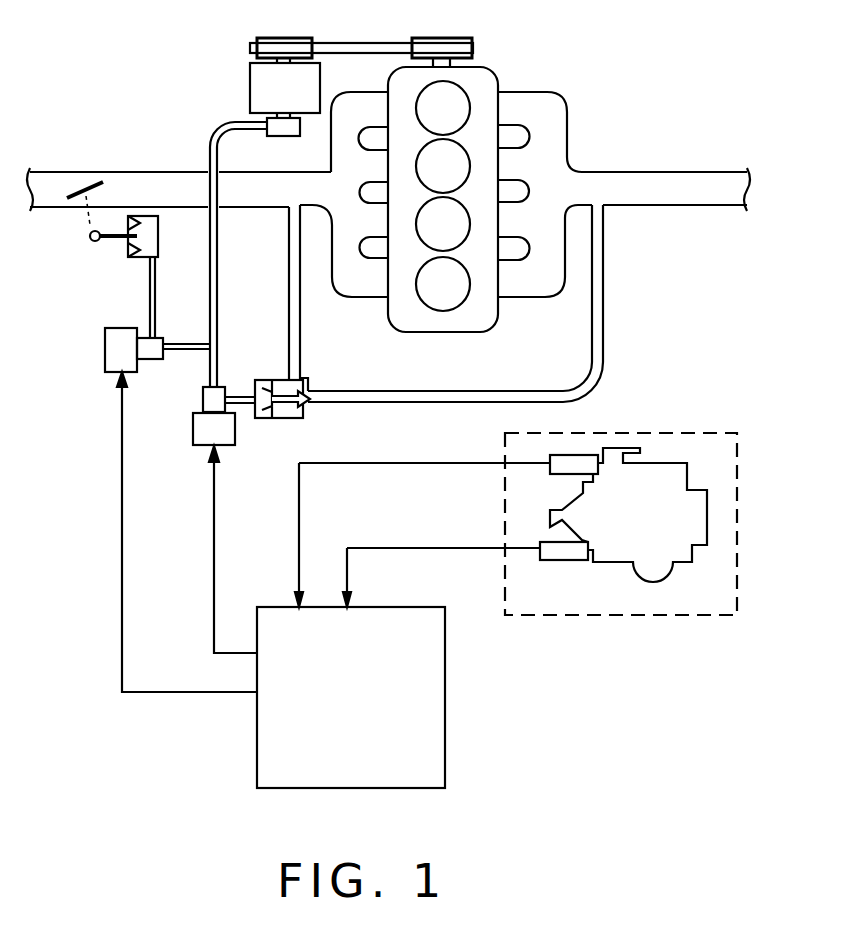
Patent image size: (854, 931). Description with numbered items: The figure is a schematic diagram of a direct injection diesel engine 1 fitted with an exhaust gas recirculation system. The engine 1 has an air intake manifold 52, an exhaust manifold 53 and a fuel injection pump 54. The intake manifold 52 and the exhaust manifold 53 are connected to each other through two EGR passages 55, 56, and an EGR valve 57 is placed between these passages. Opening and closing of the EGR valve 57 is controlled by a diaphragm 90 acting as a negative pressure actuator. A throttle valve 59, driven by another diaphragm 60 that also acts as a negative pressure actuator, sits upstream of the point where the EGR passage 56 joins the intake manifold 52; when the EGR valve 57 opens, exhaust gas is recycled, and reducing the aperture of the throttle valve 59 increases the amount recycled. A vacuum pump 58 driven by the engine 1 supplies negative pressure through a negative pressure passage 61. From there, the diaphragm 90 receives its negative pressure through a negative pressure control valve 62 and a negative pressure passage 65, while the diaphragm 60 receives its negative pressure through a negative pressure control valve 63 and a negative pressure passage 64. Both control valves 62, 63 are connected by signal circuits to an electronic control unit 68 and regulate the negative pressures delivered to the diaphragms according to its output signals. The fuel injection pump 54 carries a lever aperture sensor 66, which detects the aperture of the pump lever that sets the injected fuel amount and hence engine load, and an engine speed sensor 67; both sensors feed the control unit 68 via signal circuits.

The direct injection diesel engine 1 is at (477, 82).
The air intake manifold 52 is at (155, 180).
The exhaust manifold 53 is at (623, 185).
The fuel injection pump 54 is at (652, 477).
The exhaust gas recirculation passage 55 is at (598, 268).
The exhaust gas recirculation passage 56 is at (299, 330).
The exhaust gas recirculation valve 57 is at (300, 420).
The vacuum pump 58 is at (265, 125).
The throttle valve 59 is at (93, 175).
The diaphragm 60 is at (125, 248).
The negative pressure passage 61 is at (218, 272).
The negative pressure control valve 62 is at (197, 437).
The negative pressure control valve 63 is at (105, 358).
The negative pressure passage 64 is at (148, 303).
The negative pressure passage 65 is at (271, 399).
The lever aperture sensor 66 is at (580, 455).
The engine speed sensor 67 is at (567, 560).
The electronic control unit 68 is at (432, 705).
The diaphragm 90 is at (278, 420).